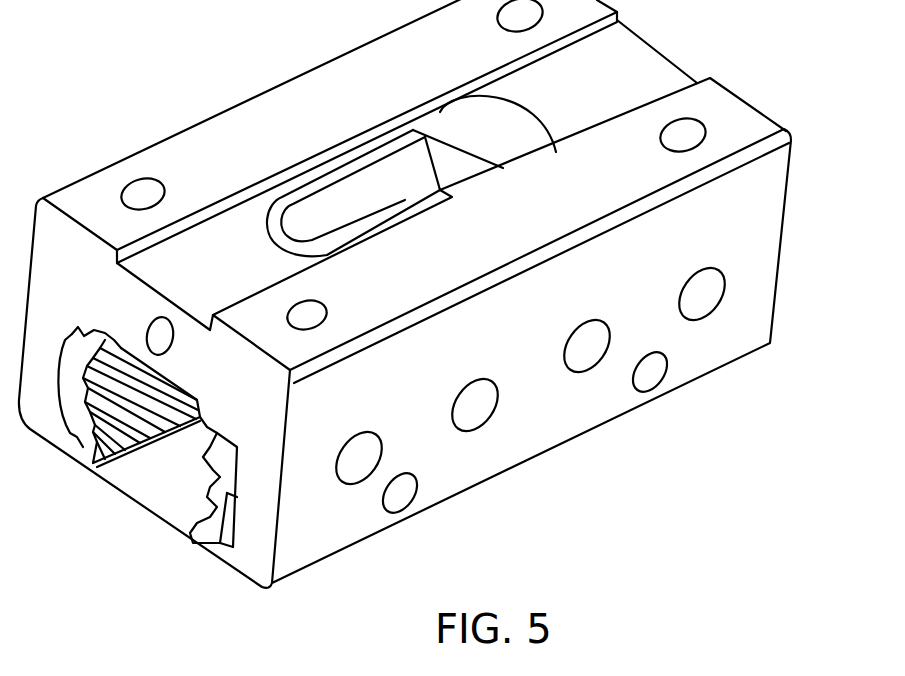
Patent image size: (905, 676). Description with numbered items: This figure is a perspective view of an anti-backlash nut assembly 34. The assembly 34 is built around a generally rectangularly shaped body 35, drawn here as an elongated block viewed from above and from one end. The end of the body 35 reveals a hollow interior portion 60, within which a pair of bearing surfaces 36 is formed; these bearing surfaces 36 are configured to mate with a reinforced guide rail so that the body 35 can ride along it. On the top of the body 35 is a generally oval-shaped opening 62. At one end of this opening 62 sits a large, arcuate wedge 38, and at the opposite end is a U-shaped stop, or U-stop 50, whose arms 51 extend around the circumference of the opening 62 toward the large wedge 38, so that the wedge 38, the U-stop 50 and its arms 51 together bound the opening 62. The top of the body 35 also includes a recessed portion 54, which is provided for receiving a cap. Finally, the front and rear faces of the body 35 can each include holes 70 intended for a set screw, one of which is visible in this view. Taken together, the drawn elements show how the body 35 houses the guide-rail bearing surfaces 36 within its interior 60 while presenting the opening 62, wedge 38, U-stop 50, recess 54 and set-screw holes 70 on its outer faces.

The anti-backlash nut assembly 34 is at (787, 100).
The body 35 is at (320, 66).
The bearing surfaces 36 is at (88, 455).
The arcuate wedge 38 is at (523, 124).
The U-shaped stop 50 is at (283, 213).
The arms 51 is at (335, 175).
The recessed portion 54 is at (637, 62).
The hollow interior portion 60 is at (152, 490).
The oval-shaped opening 62 is at (407, 165).
The holes 70 is at (147, 318).